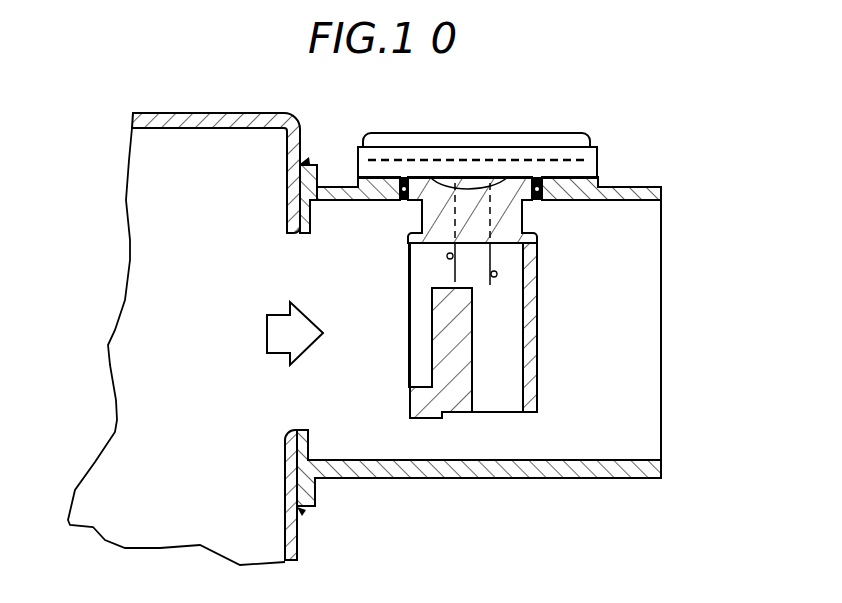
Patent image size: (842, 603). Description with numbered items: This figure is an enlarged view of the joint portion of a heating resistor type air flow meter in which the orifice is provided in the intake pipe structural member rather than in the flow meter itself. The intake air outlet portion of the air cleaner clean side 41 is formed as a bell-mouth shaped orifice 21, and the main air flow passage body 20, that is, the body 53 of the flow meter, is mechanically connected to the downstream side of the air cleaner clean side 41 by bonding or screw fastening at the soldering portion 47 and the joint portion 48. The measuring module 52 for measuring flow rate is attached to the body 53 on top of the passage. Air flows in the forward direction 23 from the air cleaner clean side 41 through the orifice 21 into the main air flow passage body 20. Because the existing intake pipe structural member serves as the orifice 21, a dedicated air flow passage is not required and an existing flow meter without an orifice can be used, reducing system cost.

The air cleaner clean side 41 is at (181, 113).
The orifice 21 is at (289, 219).
The soldering portion 47 is at (313, 203).
The joint portion 48 is at (302, 162).
The measuring module 52 is at (500, 133).
The main air flow passage body 20 is at (527, 479).
The body 53 is at (479, 365).
The forward direction 23 is at (270, 354).